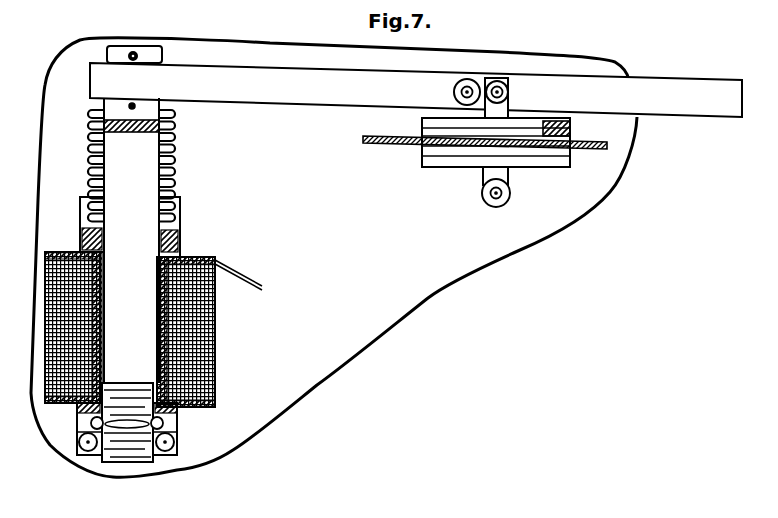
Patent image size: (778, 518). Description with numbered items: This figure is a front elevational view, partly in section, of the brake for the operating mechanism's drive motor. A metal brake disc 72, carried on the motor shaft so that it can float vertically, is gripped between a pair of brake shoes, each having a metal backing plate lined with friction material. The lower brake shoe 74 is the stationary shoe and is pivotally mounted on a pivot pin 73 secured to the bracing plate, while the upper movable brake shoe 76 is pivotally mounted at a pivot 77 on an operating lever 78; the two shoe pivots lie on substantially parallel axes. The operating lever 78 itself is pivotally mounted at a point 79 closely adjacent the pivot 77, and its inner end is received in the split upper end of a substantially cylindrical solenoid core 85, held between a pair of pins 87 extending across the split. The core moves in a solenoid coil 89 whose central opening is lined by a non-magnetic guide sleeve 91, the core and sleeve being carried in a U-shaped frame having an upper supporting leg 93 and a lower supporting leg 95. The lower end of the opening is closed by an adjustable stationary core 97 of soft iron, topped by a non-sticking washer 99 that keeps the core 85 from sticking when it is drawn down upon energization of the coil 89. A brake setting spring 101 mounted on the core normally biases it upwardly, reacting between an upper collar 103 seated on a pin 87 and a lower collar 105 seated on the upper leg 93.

The brake disc 72 is at (405, 141).
The pivot pin 73 is at (506, 193).
The lower brake shoe 74 is at (570, 160).
The upper movable brake shoe 76 is at (570, 131).
The brake shoe pivot 77 is at (502, 81).
The operating lever 78 is at (318, 62).
The operating lever pivot 79 is at (469, 80).
The solenoid core 85 is at (148, 195).
The pins 87 is at (137, 56).
The solenoid coil 89 is at (213, 351).
The guide sleeve 91 is at (150, 371).
The upper supporting leg 93 is at (178, 248).
The lower supporting leg 95 is at (182, 413).
The adjustable stationary core 97 is at (145, 458).
The non-sticking washer 99 is at (125, 383).
The brake setting spring 101 is at (172, 152).
The upper collar 103 is at (165, 116).
The lower collar 105 is at (88, 240).